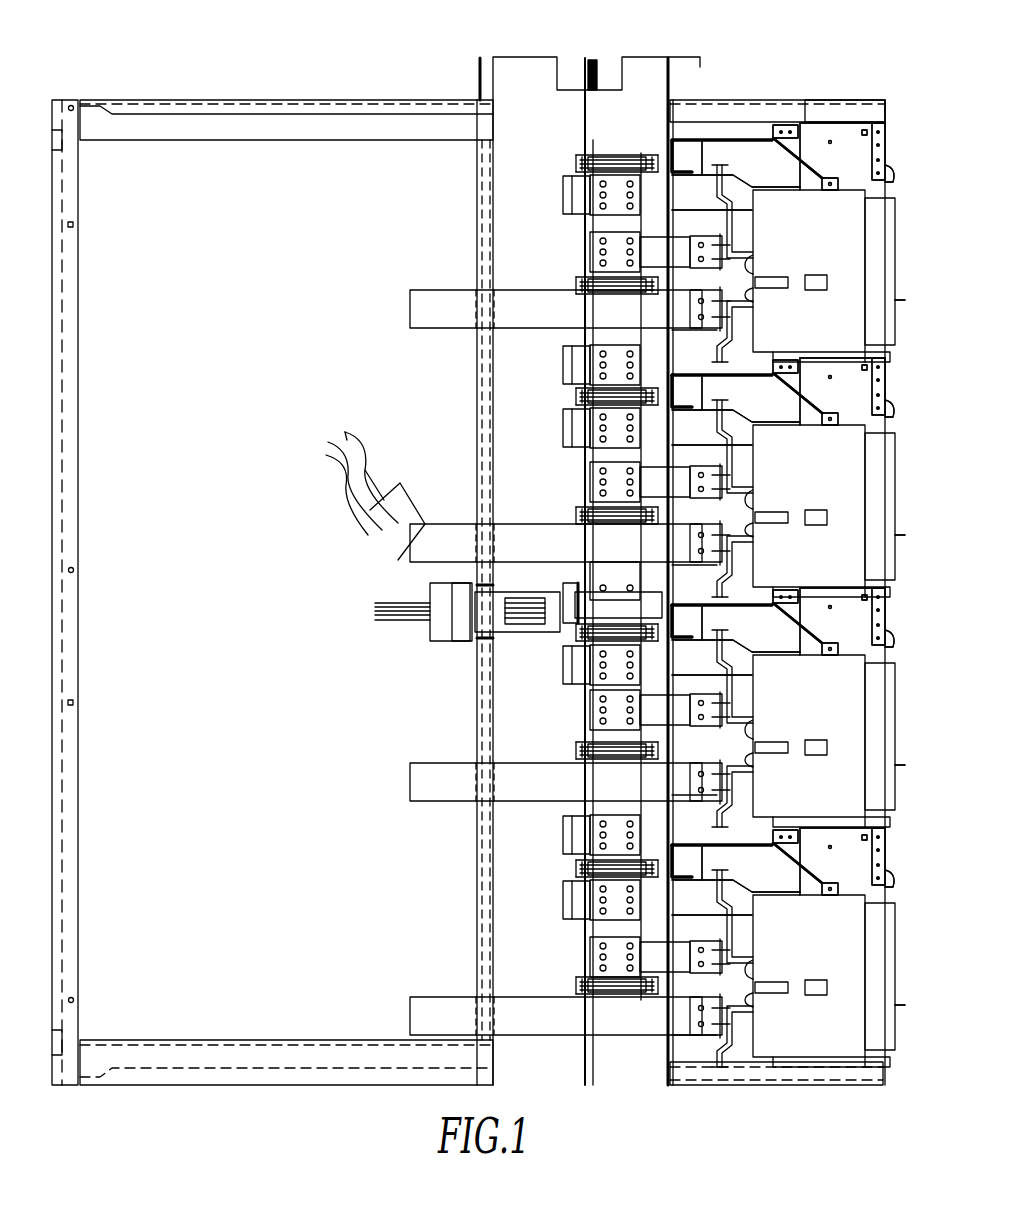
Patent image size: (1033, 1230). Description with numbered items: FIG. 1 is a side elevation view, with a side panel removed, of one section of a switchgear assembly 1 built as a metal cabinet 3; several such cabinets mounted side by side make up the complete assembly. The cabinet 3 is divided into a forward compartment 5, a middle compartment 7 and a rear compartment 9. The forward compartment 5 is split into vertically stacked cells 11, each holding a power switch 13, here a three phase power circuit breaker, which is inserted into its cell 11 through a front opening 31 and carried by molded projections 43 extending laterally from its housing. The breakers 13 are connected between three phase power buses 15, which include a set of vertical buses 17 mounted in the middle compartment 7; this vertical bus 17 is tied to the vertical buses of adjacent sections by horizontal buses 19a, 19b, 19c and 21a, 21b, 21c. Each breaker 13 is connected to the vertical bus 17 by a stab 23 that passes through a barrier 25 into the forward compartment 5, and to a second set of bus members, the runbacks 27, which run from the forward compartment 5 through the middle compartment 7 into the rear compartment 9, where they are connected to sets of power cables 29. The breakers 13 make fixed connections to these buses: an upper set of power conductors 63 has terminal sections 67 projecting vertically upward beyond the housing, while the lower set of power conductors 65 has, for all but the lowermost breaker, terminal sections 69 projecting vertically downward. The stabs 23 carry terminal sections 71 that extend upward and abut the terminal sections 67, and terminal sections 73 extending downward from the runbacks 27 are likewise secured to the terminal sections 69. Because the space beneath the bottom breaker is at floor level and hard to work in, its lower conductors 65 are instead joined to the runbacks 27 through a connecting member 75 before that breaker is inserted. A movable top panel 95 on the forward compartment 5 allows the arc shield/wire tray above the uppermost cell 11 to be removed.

The switchgear assembly 1 is at (326, 54).
The metal cabinet 3 is at (190, 80).
The forward compartment 5 is at (700, 178).
The middle compartment 7 is at (522, 158).
The rear compartment 9 is at (148, 158).
The cells 11 is at (785, 160).
The power circuit breaker 13 is at (850, 256).
The three phase power buses 15 is at (496, 420).
The vertical buses 17 is at (582, 240).
The horizontal bus 19a is at (562, 196).
The horizontal bus 19b is at (562, 352).
The horizontal bus 19c is at (562, 418).
The horizontal bus 21a is at (562, 656).
The horizontal bus 21b is at (562, 840).
The horizontal bus 21c is at (562, 900).
The stab 23 is at (658, 240).
The barrier 25 is at (675, 155).
The runbacks 27 is at (437, 300).
The power cables 29 is at (345, 425).
The front openings 31 is at (880, 175).
The molded projections 43 is at (812, 277).
The upper set of three phase power conductors 63 is at (752, 265).
The lower set of three phase power conductors 65 is at (752, 292).
The terminal sections 67 is at (738, 212).
The terminal sections 69 is at (735, 322).
The terminal sections 71 is at (712, 215).
The terminal sections 73 is at (700, 330).
The connecting member 75 is at (740, 1030).
The movable top panel 95 is at (755, 100).